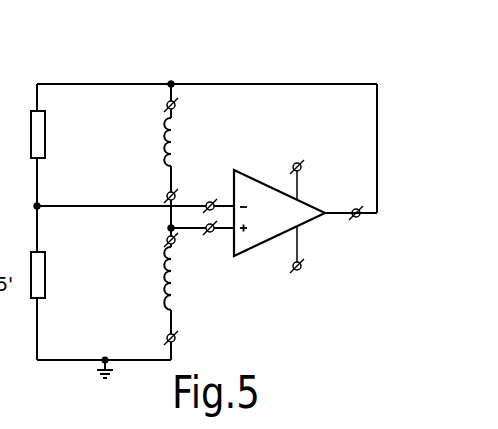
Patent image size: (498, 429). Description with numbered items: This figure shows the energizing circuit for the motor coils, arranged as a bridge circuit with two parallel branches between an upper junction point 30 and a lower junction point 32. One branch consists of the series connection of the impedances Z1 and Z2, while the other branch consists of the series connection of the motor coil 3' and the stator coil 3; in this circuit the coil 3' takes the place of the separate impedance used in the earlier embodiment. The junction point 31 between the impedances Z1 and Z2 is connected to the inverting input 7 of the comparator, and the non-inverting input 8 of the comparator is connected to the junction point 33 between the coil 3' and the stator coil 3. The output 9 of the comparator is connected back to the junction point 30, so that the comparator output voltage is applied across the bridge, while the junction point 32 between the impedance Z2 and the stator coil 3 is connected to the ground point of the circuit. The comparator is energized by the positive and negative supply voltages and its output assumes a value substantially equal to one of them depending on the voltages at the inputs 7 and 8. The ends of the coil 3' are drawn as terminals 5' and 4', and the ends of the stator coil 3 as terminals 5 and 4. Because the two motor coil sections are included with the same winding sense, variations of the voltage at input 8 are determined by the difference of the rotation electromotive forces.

The junction point 30 is at (171, 81).
The terminal of inductor coil 3' 5' is at (183, 105).
The coil 3' is at (153, 142).
The terminal of inductor coil 3' 4' is at (180, 191).
The inverting input 7 is at (212, 201).
The junction point 33 is at (167, 228).
The non-inverting input 8 is at (212, 233).
The terminal of inductor coil 3 5 is at (177, 245).
The stator coil 3 is at (155, 279).
The terminal of inductor coil 3 4 is at (179, 339).
The junction point 32 is at (110, 364).
The junction point 31 is at (40, 209).
The output 9 is at (358, 218).
The impedance Z1 is at (46, 154).
The impedance Z2 is at (46, 296).